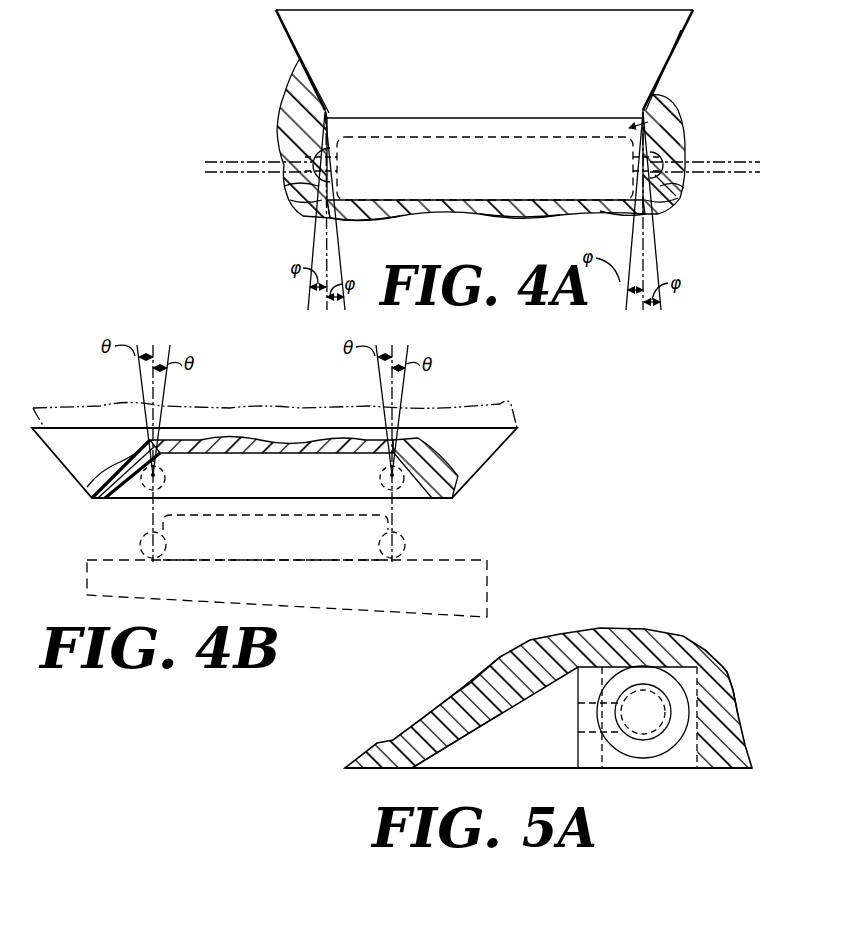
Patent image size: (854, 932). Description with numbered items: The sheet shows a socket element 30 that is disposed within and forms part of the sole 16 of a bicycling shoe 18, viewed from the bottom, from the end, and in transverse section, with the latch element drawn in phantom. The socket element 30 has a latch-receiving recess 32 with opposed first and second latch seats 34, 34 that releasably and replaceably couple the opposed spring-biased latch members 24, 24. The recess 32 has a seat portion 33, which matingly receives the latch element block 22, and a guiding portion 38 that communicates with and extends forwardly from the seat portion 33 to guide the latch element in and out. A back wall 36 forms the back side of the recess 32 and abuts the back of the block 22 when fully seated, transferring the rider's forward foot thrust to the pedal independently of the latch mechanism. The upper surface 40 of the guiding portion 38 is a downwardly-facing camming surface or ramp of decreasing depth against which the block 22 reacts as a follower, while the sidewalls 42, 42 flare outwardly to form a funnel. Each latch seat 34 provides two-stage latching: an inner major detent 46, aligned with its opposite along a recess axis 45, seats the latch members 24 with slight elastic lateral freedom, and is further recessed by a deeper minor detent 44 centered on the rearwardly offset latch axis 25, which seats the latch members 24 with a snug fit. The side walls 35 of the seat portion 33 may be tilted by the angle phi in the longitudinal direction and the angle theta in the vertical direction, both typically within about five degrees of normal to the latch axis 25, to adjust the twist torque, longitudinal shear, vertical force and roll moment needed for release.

In FIG. 4A, the sole 16 is at (502, 218).
In FIG. 4B, the sole 16 is at (80, 455).
In FIG. 5A, the sole 16 is at (457, 698).
In FIG. 4B, the bicycling shoe 18 is at (457, 410).
In FIG. 4A, the latch element block 22 is at (388, 136).
In FIG. 4B, the latch element block 22 is at (272, 542).
In FIG. 5A, the latch element block 22 is at (588, 729).
In FIG. 4A, the latch members 24 is at (338, 168).
In FIG. 4B, the latch members 24 is at (138, 538).
In FIG. 5A, the latch members 24 is at (600, 704).
In FIG. 4A, the latch axis 25 is at (226, 172).
In FIG. 4A, the socket element 30 is at (302, 74).
In FIG. 4B, the socket element 30 is at (241, 422).
In FIG. 5A, the socket element 30 is at (456, 671).
In FIG. 5A, the latch-receiving recess 32 is at (597, 672).
In FIG. 4A, the seat portion 33 is at (660, 106).
In FIG. 5A, the seat portion 33 is at (572, 746).
In FIG. 4A, the latch seats 34 is at (306, 212).
In FIG. 4B, the latch seats 34 is at (403, 492).
In FIG. 4A, the side walls 35 is at (330, 126).
In FIG. 4B, the side walls 35 is at (402, 442).
In FIG. 4A, the back wall 36 is at (398, 200).
In FIG. 5A, the back wall 36 is at (696, 726).
In FIG. 4A, the guiding portion 38 is at (654, 32).
In FIG. 5A, the guiding portion 38 is at (512, 753).
In FIG. 4A, the camming surface 40 is at (498, 63).
In FIG. 5A, the camming surface 40 is at (482, 726).
In FIG. 4A, the sidewalls of the guide portion 42 is at (306, 80).
In FIG. 5A, the sidewalls of the guide portion 42 is at (482, 761).
In FIG. 4A, the minor detent 44 is at (292, 184).
In FIG. 5A, the minor detent 44 is at (656, 707).
In FIG. 4A, the recess axis 45 is at (226, 162).
In FIG. 4A, the major detent 46 is at (290, 138).
In FIG. 5A, the major detent 46 is at (645, 747).